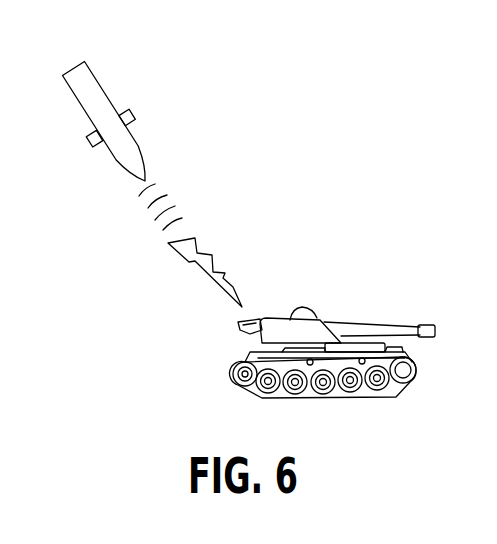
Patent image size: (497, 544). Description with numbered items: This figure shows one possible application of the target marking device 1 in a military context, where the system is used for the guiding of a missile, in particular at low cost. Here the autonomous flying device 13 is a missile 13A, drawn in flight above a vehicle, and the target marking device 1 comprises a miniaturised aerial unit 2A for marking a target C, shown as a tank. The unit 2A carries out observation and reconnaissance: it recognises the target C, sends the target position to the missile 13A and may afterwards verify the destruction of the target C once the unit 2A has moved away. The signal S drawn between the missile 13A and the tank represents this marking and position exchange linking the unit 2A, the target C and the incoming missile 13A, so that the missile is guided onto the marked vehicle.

The autonomous flying device 13 is at (135, 140).
The missile 13A is at (90, 124).
The sound / acoustic signal S is at (212, 255).
The target marking device 1 is at (287, 315).
The target C is at (315, 313).
The miniaturised aerial unit 2A is at (245, 328).